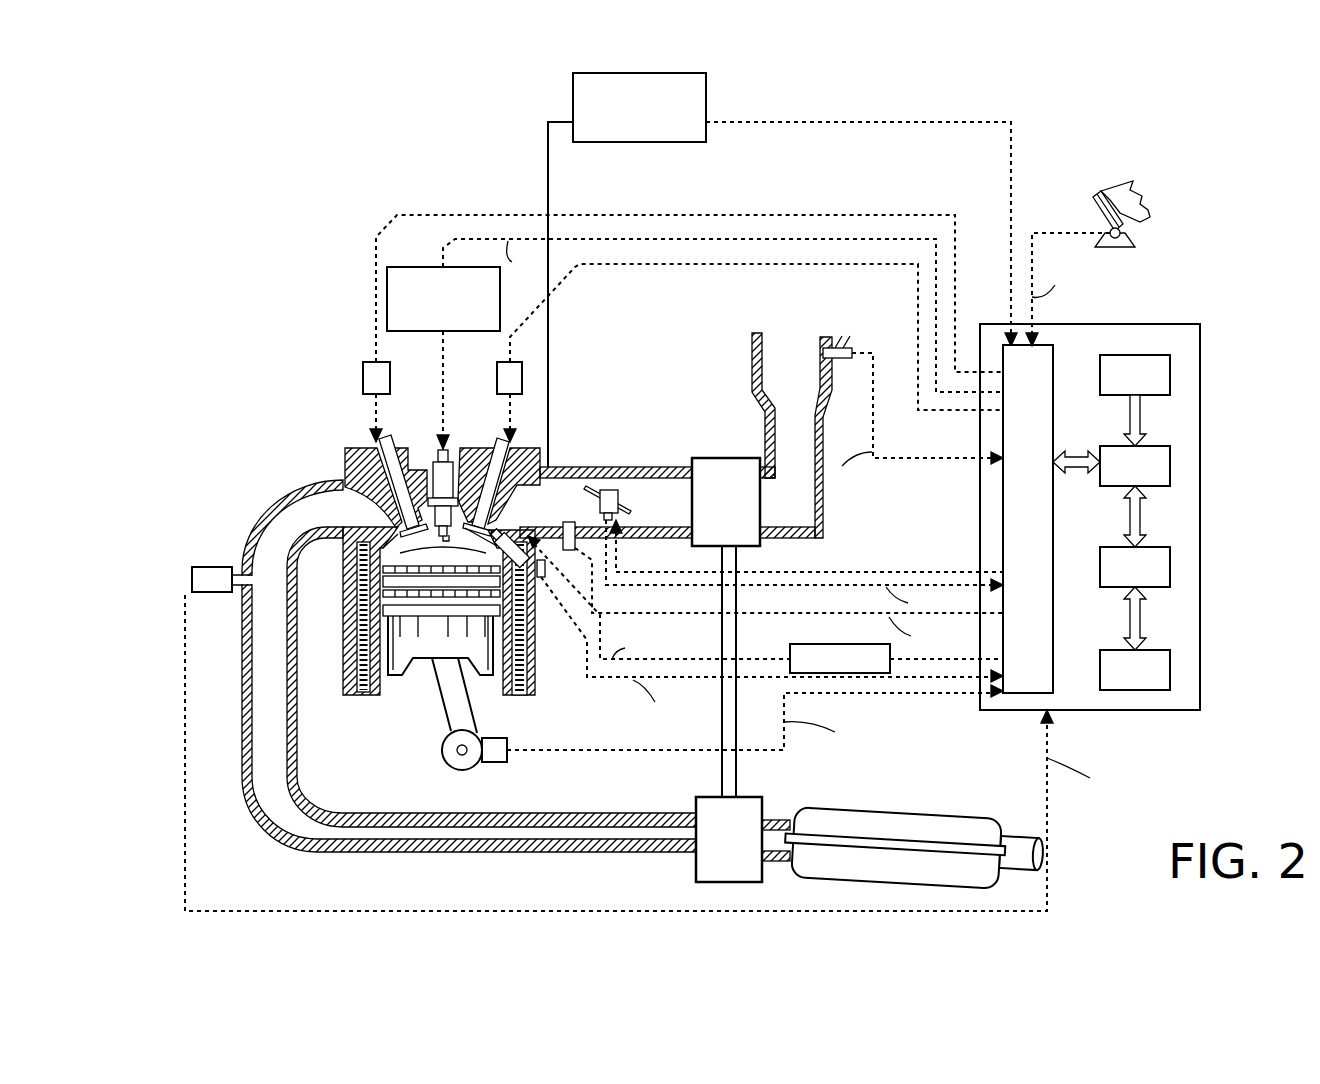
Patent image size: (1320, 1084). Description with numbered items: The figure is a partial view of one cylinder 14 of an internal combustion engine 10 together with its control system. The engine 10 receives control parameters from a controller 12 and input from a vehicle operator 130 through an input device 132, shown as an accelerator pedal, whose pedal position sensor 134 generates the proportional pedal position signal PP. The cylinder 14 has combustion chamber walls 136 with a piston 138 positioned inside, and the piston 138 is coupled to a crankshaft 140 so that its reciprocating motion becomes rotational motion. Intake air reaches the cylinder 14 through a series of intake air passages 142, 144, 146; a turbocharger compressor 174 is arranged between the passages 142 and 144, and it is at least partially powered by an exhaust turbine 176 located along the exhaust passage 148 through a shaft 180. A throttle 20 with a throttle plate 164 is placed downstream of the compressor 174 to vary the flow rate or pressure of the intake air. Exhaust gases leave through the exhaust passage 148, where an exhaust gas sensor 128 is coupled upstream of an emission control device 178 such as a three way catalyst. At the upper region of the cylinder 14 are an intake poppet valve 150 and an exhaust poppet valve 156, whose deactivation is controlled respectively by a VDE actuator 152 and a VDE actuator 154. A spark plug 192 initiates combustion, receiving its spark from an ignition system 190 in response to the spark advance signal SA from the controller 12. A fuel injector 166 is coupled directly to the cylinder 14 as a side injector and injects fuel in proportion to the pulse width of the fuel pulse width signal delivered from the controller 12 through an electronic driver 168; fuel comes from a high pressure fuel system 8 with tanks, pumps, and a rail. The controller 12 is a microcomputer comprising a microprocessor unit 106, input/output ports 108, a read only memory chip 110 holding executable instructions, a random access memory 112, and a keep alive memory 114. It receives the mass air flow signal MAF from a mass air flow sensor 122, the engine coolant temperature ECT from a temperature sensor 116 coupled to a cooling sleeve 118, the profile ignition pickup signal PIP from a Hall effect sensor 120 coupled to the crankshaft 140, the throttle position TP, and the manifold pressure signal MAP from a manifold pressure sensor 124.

The high pressure fuel system 8 is at (706, 85).
The internal combustion engine 10 is at (184, 157).
The controller 12 is at (1200, 322).
The cylinder 14 is at (348, 571).
The throttle 20 is at (611, 482).
The microprocessor unit 106 is at (1170, 462).
The input/output ports 108 is at (1055, 353).
The read only memory chip 110 is at (1170, 372).
The random access memory 112 is at (1170, 572).
The keep alive memory 114 is at (1170, 672).
The temperature sensor 116 is at (545, 655).
The cooling sleeve 118 is at (540, 655).
The Hall effect sensor 120 is at (496, 766).
The mass air flow sensor 122 is at (846, 342).
The manifold pressure sensor 124 is at (573, 553).
The exhaust gas sensor 128 is at (192, 572).
The vehicle operator 130 is at (1145, 193).
The input device 132 is at (1097, 210).
The pedal position sensor 134 is at (1122, 228).
The combustion chamber walls 136 is at (388, 688).
The piston 138 is at (425, 650).
The crankshaft 140 is at (450, 768).
The intake air passage 142 is at (785, 379).
The intake air passage 144 is at (680, 512).
The intake air passage 146 is at (582, 512).
The exhaust passage 148 is at (303, 521).
The intake poppet valve 150 is at (479, 520).
The VDE actuator 152 is at (497, 378).
The VDE actuator 154 is at (363, 378).
The exhaust poppet valve 156 is at (406, 522).
The throttle plate 164 is at (590, 484).
The fuel injector 166 is at (523, 537).
The electronic driver 168 is at (794, 645).
The compressor 174 is at (712, 458).
The exhaust turbine 176 is at (696, 868).
The emission control device 178 is at (962, 812).
The shaft 180 is at (722, 758).
The ignition system 190 is at (402, 267).
The spark plug 192 is at (440, 462).